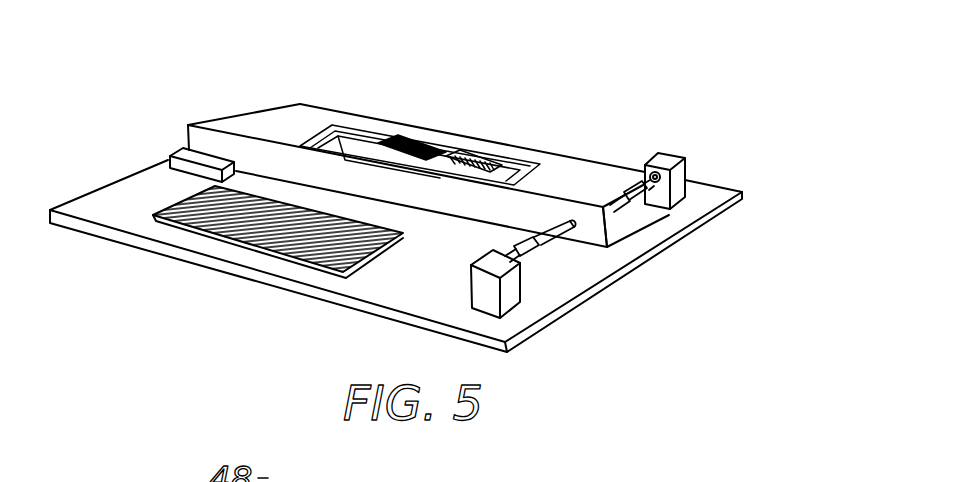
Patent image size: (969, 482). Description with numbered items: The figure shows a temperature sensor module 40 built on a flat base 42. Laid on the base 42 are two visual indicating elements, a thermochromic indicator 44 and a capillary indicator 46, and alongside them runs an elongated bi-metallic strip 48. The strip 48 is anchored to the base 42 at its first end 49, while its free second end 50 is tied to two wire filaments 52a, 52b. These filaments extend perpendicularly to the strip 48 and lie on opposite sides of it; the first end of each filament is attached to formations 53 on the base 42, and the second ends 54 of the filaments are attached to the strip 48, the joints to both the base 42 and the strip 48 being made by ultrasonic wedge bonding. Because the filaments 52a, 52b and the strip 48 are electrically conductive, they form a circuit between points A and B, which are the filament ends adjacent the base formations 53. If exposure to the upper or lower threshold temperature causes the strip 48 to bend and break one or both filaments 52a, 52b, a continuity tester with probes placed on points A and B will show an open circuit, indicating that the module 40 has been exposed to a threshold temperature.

The temperature sensor module 40 is at (566, 100).
The base 42 is at (195, 258).
The thermochromic indicator 44 is at (300, 241).
The capillary indicator 46 is at (412, 136).
The bi-metallic strip 48 is at (282, 146).
The first end 49 is at (193, 135).
The second end 50 is at (600, 246).
The wire filament 52a is at (622, 197).
The wire filament 52b is at (528, 258).
The formations 53 is at (677, 174).
The second ends 54 is at (576, 224).